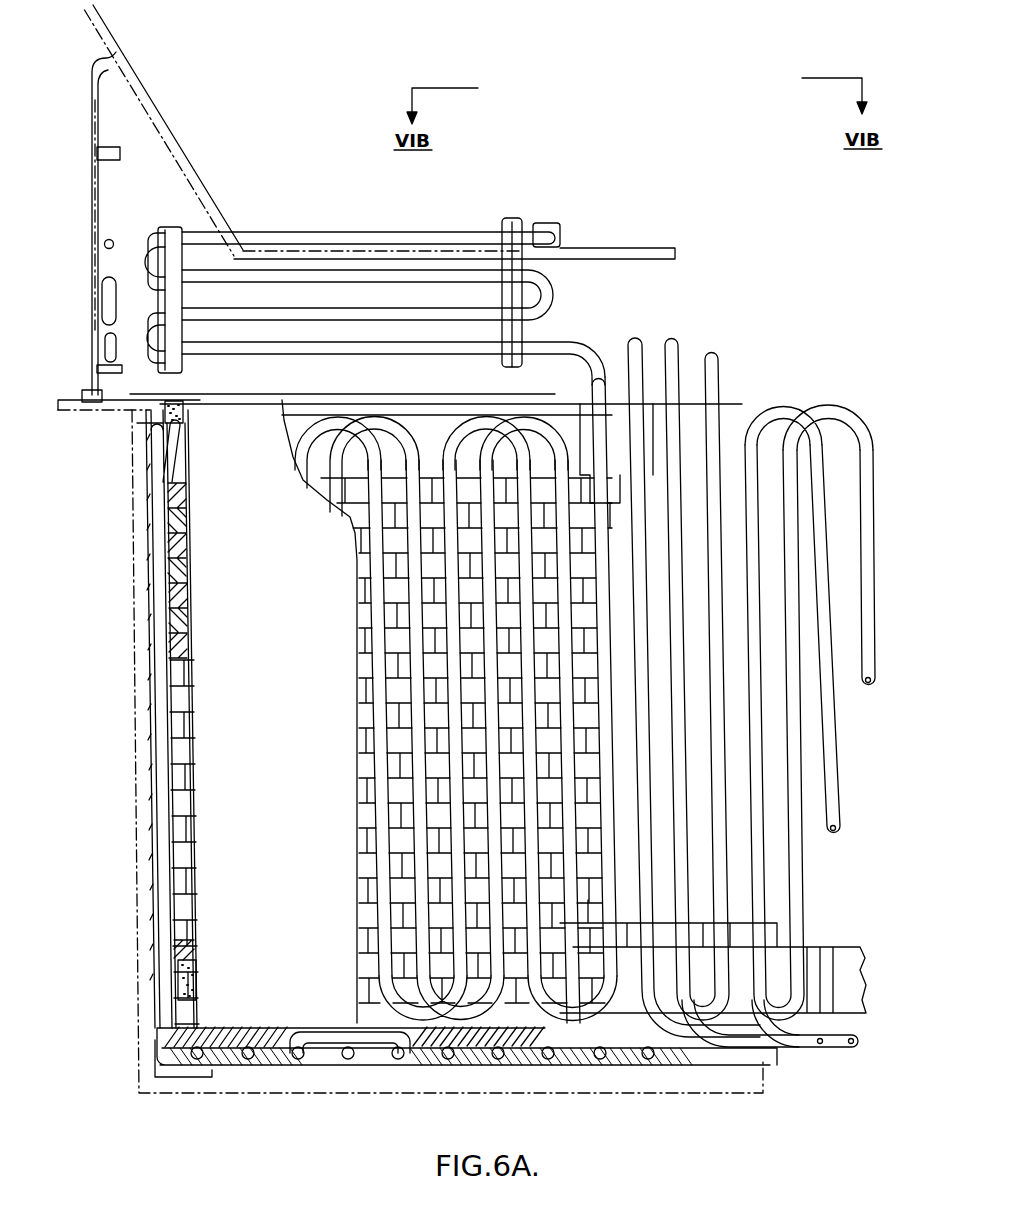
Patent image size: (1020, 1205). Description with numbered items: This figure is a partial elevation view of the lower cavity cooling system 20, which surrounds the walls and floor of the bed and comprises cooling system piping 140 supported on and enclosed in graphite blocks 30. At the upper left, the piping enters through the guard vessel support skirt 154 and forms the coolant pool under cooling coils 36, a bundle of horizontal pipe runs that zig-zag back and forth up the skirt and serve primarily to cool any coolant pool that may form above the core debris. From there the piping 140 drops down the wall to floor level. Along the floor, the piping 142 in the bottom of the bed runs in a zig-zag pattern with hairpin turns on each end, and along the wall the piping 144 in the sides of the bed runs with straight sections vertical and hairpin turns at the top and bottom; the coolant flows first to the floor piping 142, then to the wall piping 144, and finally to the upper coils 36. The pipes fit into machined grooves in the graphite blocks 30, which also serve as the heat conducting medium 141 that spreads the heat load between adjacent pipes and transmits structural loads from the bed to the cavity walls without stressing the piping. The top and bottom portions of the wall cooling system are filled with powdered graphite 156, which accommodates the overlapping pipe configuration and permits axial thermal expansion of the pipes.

The guard vessel support skirt 154 is at (95, 212).
The coolant pool under cooling coils 36 is at (240, 357).
The cooling system piping 140 is at (537, 670).
The graphite blocks 30 is at (134, 719).
The heat conducting medium 141 is at (200, 690).
The powdered graphite 156 is at (168, 416).
The piping in the sides of the bed 144 is at (833, 748).
The piping in the bottom of the bed 142 is at (363, 1056).
The cooling system 20 is at (724, 1108).